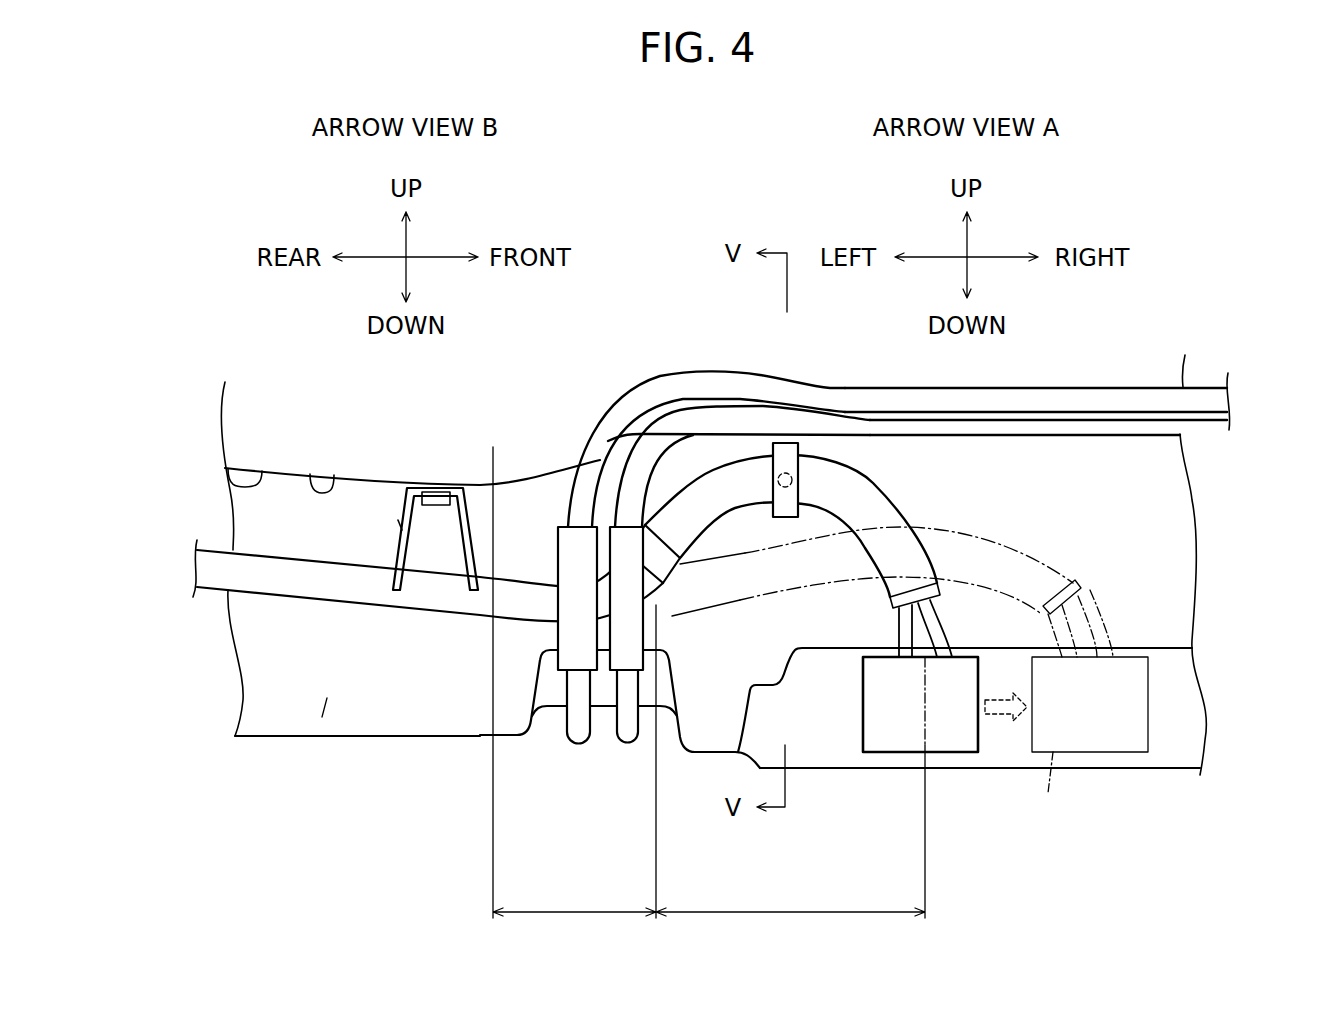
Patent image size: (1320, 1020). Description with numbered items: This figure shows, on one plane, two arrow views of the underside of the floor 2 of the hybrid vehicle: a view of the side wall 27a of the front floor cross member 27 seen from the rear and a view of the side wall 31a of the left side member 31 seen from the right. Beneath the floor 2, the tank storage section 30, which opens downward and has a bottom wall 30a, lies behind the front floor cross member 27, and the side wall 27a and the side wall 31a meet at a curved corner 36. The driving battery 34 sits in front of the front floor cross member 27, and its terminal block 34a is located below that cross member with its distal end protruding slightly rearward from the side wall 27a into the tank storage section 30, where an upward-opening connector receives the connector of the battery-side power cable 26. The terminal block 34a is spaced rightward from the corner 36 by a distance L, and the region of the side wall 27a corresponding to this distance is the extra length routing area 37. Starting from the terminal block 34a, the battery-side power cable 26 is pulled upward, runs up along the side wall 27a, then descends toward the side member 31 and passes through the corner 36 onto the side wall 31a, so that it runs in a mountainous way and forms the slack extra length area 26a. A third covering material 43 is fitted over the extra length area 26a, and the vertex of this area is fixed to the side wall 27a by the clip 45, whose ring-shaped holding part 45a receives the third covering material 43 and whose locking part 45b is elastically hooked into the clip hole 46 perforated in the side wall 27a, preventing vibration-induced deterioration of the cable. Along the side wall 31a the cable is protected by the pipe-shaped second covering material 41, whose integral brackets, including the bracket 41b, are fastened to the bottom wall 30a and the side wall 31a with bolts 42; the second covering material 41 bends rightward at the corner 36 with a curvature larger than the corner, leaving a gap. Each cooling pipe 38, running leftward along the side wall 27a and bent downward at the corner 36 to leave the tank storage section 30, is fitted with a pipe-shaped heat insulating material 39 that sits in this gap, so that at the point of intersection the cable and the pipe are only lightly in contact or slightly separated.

The floor 2 is at (308, 470).
The battery-side power cable 26 is at (927, 623).
The extra length area 26a is at (893, 508).
The front floor cross member 27 is at (1153, 563).
The side wall of front floor cross member 27a is at (1130, 502).
The tank storage section 30 is at (401, 688).
The bottom wall of tank storage section 30a is at (248, 471).
The left side member 31 is at (265, 740).
The side wall of left side member 31a is at (327, 698).
The driving battery 34 is at (1187, 707).
The terminal block 34a is at (963, 753).
The corner 36 is at (574, 682).
The extra length routing area 37 is at (790, 787).
The cooling pipe 38 is at (577, 747).
The heat insulating material 39 is at (617, 530).
The second covering material 41 is at (283, 578).
The bracket 41b is at (400, 522).
The bolts 42 is at (438, 497).
The third covering material 43 is at (710, 480).
The clip 45 is at (803, 448).
The holding part 45a is at (803, 468).
The locking part 45b is at (782, 483).
The clip hole 46 is at (790, 483).